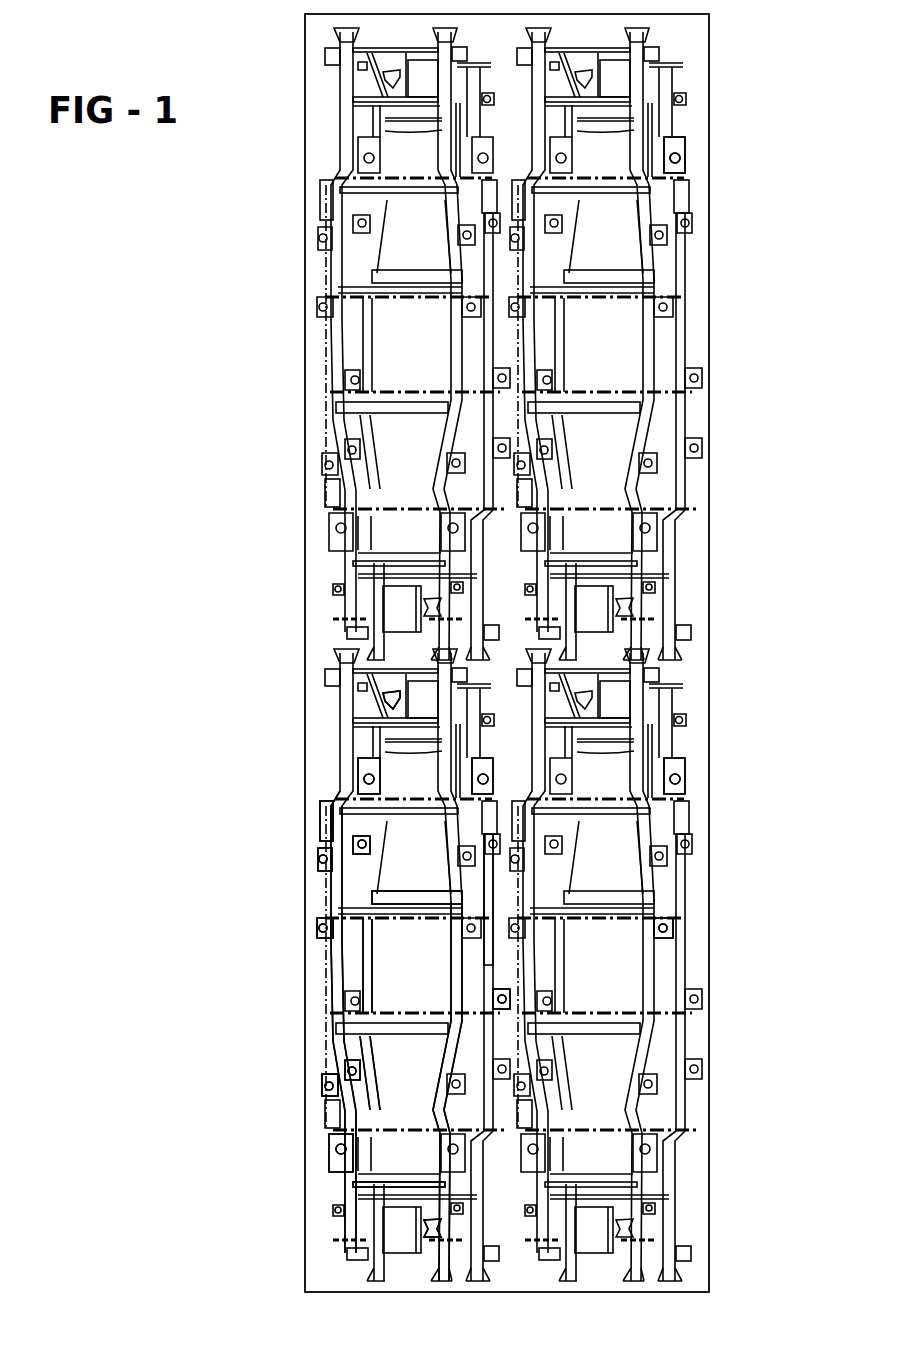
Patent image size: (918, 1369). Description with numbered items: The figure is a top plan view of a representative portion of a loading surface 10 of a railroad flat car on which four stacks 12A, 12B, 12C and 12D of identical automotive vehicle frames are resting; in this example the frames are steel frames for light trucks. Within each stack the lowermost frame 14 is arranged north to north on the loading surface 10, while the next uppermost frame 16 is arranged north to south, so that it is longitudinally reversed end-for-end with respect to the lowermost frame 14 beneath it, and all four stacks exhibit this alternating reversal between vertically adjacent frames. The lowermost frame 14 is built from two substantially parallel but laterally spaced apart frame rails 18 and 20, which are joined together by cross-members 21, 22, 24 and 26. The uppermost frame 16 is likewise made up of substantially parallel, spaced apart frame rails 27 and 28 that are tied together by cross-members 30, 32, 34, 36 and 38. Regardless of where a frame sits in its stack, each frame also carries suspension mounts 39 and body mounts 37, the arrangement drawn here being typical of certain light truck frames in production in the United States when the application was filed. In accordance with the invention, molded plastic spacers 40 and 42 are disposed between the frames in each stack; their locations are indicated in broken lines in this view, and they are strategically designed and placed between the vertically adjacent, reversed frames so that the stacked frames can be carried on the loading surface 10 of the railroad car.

The loading surface 10 is at (698, 80).
The stack 12A is at (318, 889).
The stack 12B is at (678, 738).
The stack 12C is at (320, 353).
The stack 12D is at (682, 200).
The lowermost frame 14 is at (506, 958).
The uppermost frame 16 is at (318, 973).
The frame rail 18 is at (498, 1182).
The frame rail 20 is at (372, 973).
The cross-member 21 is at (428, 1250).
The cross-member 22 is at (400, 1110).
The cross-member 24 is at (375, 896).
The cross-member 26 is at (332, 790).
The frame rail 27 is at (450, 975).
The frame rail 28 is at (368, 778).
The cross-member 30 is at (398, 730).
The cross-member 32 is at (355, 848).
The cross-member 34 is at (352, 950).
The cross-member 36 is at (355, 1055).
The body mount 37 is at (318, 858).
The cross-member 38 is at (345, 1167).
The suspension mount 39 is at (327, 1149).
The molded plastic spacer 40 is at (330, 1067).
The molded plastic spacer 42 is at (328, 800).